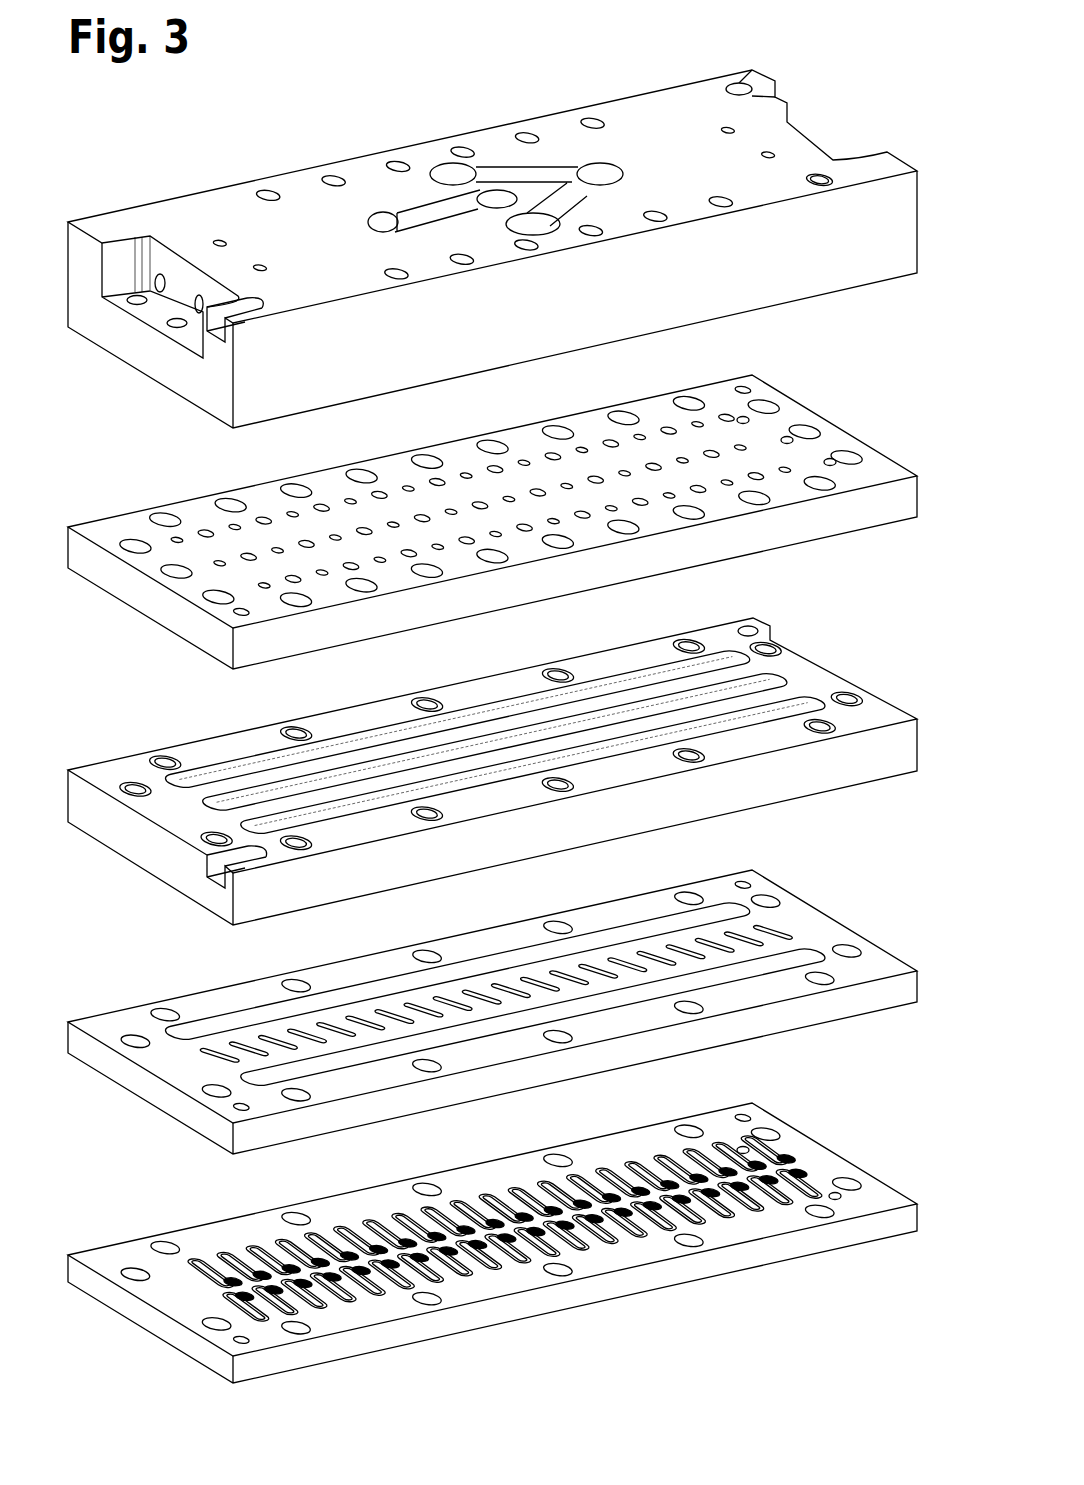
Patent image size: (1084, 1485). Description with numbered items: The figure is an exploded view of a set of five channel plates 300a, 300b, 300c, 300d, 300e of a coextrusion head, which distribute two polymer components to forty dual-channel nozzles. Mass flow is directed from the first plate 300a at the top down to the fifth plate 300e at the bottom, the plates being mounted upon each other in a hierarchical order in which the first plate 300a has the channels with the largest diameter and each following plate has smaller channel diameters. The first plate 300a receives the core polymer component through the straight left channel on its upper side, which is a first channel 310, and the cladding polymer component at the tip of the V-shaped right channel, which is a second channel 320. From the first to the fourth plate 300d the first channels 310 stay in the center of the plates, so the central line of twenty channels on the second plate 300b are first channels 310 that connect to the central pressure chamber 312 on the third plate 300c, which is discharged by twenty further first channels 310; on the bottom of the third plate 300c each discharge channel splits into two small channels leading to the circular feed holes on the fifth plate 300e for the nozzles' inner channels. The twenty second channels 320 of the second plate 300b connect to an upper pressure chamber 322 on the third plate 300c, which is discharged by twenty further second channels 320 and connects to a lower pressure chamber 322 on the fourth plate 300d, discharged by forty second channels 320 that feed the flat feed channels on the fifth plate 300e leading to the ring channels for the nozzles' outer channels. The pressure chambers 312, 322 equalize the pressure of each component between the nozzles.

The first channel plate 300a is at (156, 188).
The second channel plate 300b is at (156, 492).
The third channel plate 300c is at (156, 737).
The fourth channel plate 300d is at (156, 987).
The fifth channel plate 300e is at (156, 1222).
The first channel 310 is at (417, 214).
The central pressure chamber 312 is at (770, 683).
The second channel 320 is at (503, 172).
The pressure chamber 322 is at (735, 655).